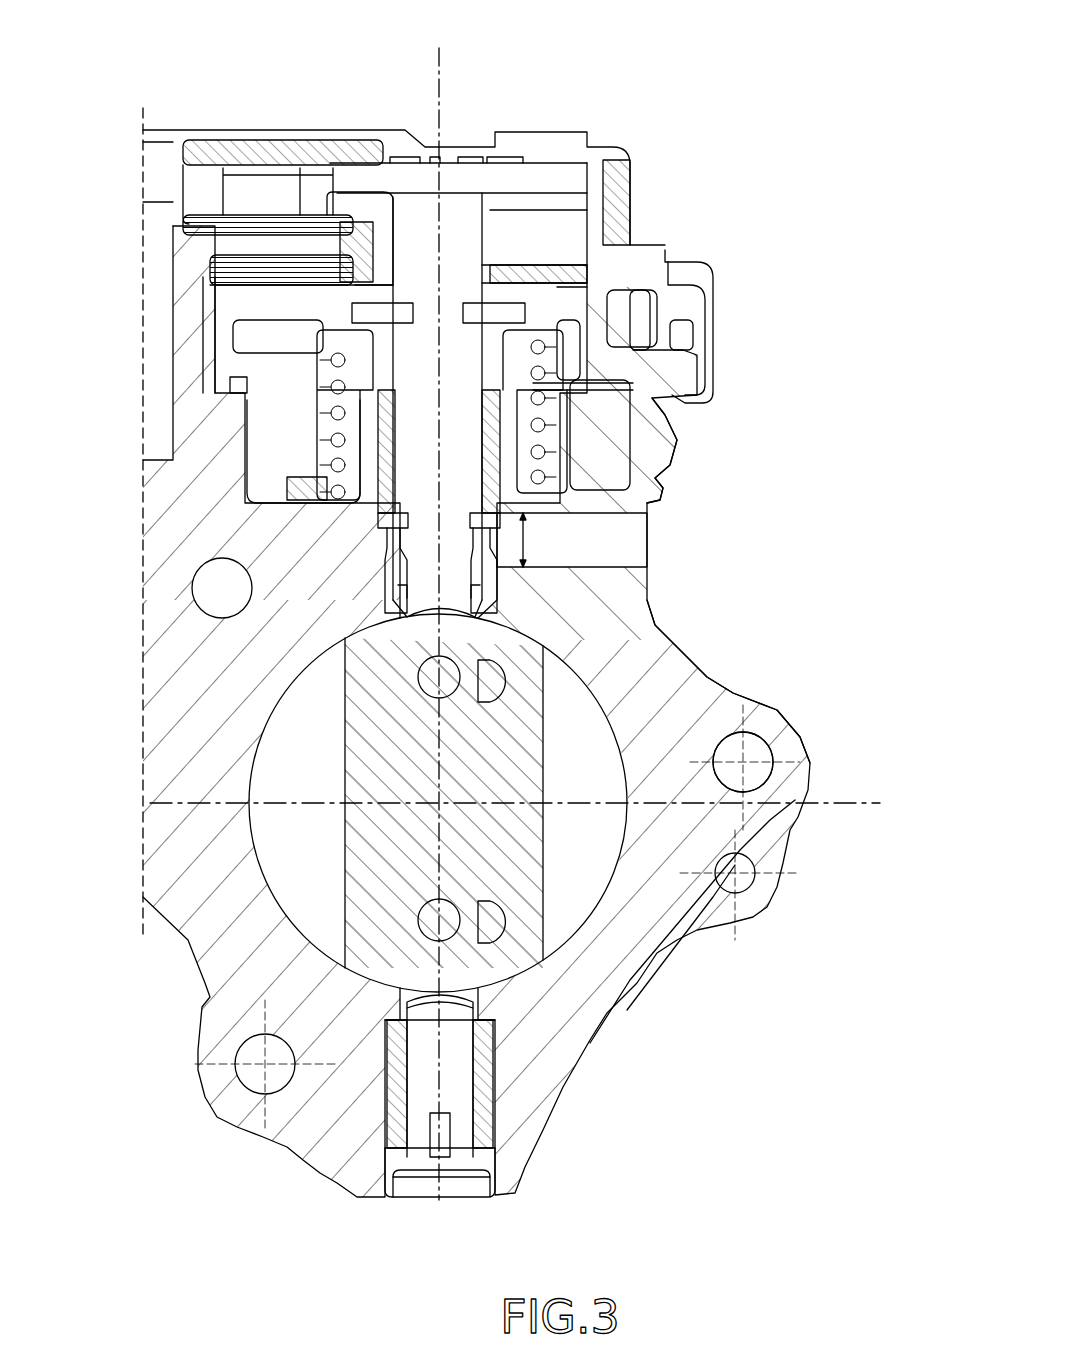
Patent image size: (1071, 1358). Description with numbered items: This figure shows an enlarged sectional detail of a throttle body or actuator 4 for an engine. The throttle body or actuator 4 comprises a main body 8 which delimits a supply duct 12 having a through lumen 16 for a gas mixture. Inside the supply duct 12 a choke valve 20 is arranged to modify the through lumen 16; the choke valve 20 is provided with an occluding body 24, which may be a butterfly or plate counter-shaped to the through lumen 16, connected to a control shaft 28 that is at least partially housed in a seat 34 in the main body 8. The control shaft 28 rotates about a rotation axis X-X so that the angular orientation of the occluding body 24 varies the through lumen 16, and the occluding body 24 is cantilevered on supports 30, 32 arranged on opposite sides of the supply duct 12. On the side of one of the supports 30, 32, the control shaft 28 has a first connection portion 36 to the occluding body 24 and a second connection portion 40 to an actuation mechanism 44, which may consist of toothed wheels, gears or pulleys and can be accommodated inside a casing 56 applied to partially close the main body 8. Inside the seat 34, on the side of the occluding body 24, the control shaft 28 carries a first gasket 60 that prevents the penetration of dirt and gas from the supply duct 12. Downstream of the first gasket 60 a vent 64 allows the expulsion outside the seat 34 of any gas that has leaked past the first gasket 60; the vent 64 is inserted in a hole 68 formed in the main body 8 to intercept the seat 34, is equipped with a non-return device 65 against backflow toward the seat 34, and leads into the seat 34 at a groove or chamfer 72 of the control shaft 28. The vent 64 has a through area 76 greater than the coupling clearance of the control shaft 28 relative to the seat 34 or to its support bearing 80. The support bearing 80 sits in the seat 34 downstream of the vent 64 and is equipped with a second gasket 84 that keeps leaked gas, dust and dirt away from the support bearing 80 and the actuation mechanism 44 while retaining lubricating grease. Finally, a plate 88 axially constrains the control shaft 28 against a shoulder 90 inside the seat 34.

The throttle body or actuator 4 is at (872, 135).
The main body 8 is at (660, 655).
The supply duct 12 is at (584, 836).
The through lumen 16 is at (527, 845).
The choke valve 20 is at (584, 836).
The occluding body 24 is at (584, 836).
The control shaft 28 is at (667, 257).
The support 30 is at (507, 1087).
The support 32 is at (690, 383).
The support bearing 80 is at (590, 392).
The seat 34 is at (393, 602).
The first connection portion 36 is at (385, 578).
The second connection portion 40 is at (462, 257).
The actuation mechanism 44 is at (397, 230).
The casing 56 is at (293, 128).
The first gasket 60 is at (760, 790).
The vent 64 is at (691, 506).
The non-return device 65 is at (548, 535).
The hole 68 is at (600, 580).
The groove or chamfer 72 is at (387, 547).
The through area 76 is at (600, 500).
The second gasket 84 is at (300, 492).
The plate 88 is at (328, 418).
The shoulder 90 is at (653, 655).
The rotation axis X is at (440, 52).